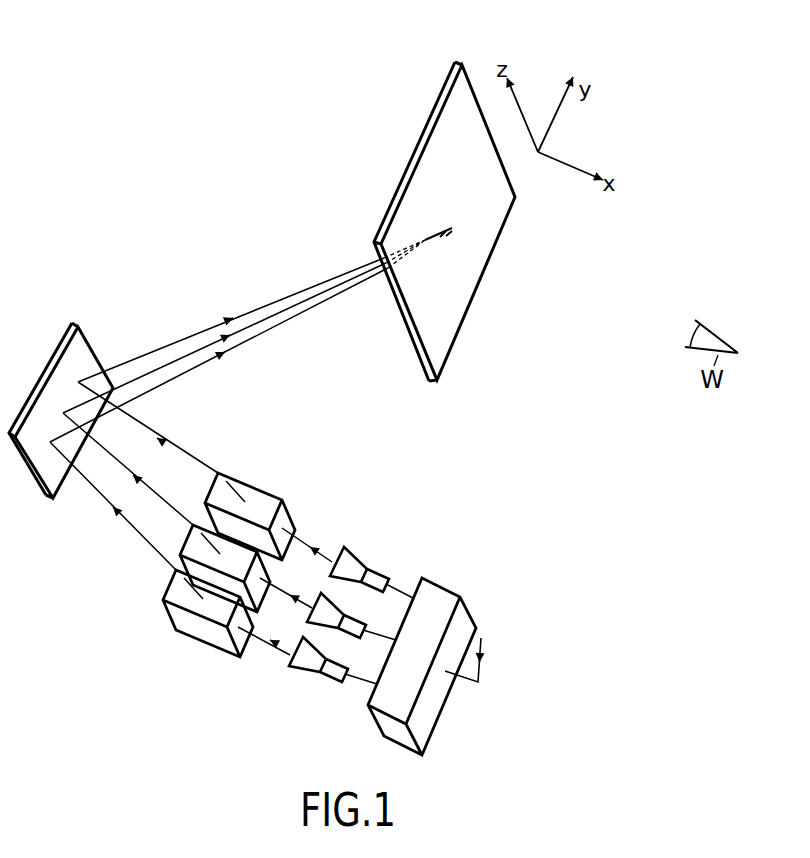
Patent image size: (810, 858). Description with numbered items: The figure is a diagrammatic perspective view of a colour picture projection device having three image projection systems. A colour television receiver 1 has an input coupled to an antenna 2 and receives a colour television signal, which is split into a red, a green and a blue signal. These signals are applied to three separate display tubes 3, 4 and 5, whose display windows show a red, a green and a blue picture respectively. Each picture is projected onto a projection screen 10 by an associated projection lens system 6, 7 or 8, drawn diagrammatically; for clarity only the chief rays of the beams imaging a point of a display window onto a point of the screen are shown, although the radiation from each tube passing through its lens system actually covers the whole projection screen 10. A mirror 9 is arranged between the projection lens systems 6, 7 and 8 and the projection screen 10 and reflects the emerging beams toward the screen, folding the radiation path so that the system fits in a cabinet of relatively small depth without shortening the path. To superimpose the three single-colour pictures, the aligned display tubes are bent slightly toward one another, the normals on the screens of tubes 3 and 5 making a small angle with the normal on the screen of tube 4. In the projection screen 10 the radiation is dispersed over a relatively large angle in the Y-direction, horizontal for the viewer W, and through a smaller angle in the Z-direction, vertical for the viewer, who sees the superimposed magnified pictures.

The colour television receiver 1 is at (435, 608).
The antenna 2 is at (490, 638).
The display tube 3 is at (338, 680).
The display tube 4 is at (358, 628).
The display tube 5 is at (375, 578).
The projection lens system 6 is at (175, 593).
The projection lens system 7 is at (190, 541).
The projection lens system 8 is at (265, 502).
The mirror 9 is at (45, 470).
The projection screen 10 is at (442, 352).